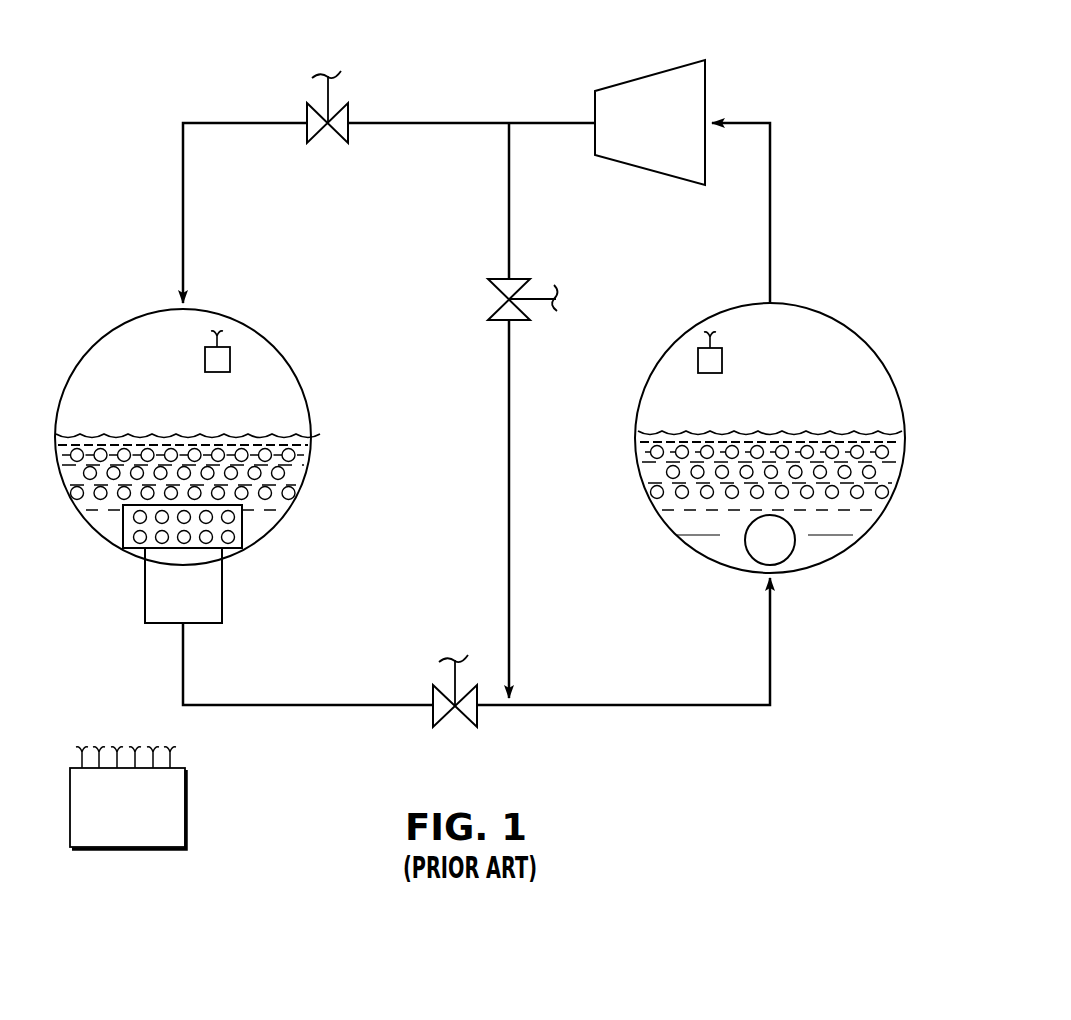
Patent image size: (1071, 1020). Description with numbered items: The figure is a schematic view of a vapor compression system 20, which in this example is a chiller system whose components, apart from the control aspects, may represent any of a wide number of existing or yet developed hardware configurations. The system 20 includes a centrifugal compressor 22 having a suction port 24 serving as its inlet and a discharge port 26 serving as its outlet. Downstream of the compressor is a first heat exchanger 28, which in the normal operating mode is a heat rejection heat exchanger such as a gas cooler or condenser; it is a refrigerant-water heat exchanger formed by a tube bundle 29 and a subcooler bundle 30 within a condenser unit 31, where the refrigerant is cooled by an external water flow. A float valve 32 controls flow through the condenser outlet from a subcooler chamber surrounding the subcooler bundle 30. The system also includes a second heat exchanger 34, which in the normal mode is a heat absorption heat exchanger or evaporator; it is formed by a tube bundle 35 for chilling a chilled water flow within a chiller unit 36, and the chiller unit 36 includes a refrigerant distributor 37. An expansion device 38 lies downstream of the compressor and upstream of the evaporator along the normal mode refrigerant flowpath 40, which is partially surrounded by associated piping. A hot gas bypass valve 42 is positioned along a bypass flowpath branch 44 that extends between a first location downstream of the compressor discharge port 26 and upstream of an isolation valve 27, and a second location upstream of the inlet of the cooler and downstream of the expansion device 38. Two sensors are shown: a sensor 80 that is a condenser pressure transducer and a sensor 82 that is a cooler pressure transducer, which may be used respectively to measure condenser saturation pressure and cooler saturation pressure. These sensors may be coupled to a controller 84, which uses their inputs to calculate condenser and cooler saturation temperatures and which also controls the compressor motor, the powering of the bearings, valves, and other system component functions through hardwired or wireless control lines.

The vapor compression system 20 is at (853, 103).
The centrifugal compressor 22 is at (657, 87).
The suction port 24 is at (710, 116).
The discharge port 26 is at (593, 121).
The isolation valve 27 is at (333, 149).
The first heat exchanger 28 is at (254, 376).
The tube bundle 29 is at (74, 468).
The subcooler bundle 30 is at (136, 526).
The condenser unit 31 is at (62, 351).
The float valve 32 is at (212, 587).
The second heat exchanger 34 is at (854, 393).
The tube bundle 35 is at (882, 470).
The chiller unit 36 is at (836, 287).
The refrigerant distributor 37 is at (787, 545).
The expansion device 38 is at (487, 735).
The normal mode refrigerant flowpath 40 is at (692, 722).
The hot gas bypass valve 42 is at (464, 305).
The bypass flowpath branch 44 is at (514, 394).
The sensor 80 is at (230, 358).
The sensor 82 is at (698, 362).
The controller 84 is at (113, 817).